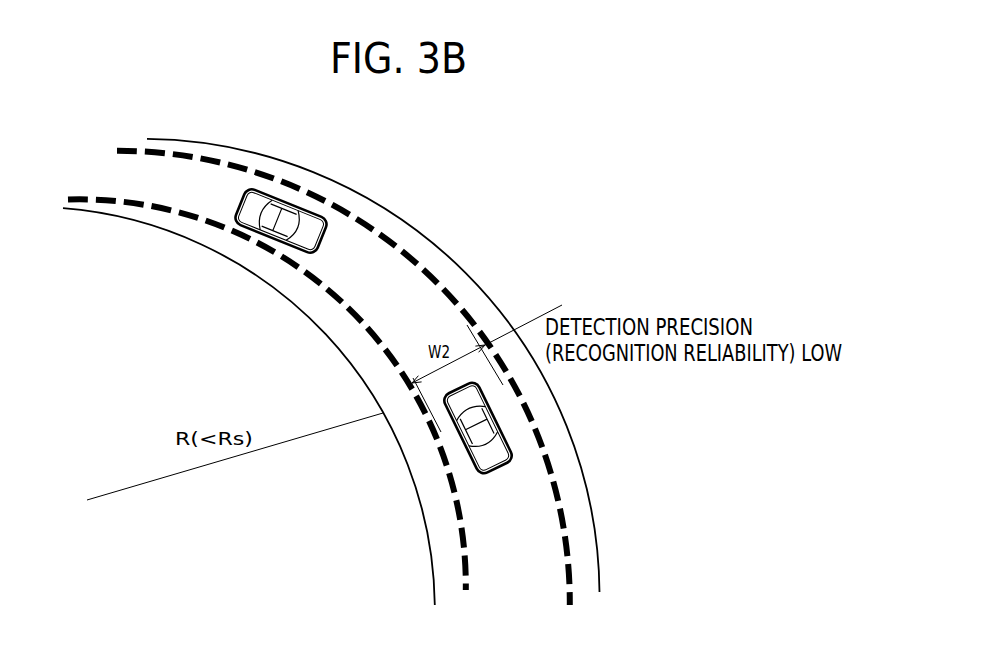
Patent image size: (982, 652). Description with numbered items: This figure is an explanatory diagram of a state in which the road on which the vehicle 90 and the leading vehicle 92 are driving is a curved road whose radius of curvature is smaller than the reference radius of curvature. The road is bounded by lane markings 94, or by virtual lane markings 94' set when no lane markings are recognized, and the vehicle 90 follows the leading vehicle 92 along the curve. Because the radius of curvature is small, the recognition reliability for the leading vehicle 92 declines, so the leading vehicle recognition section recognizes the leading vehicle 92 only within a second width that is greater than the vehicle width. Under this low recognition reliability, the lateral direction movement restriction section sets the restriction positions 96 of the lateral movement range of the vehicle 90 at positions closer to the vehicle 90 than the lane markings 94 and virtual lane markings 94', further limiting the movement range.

The lane markings 94 is at (331, 360).
The virtual lane markings 94' is at (331, 360).
The restriction positions 96 is at (78, 195).
The vehicle 90 is at (325, 240).
The leading vehicle 92 is at (496, 470).